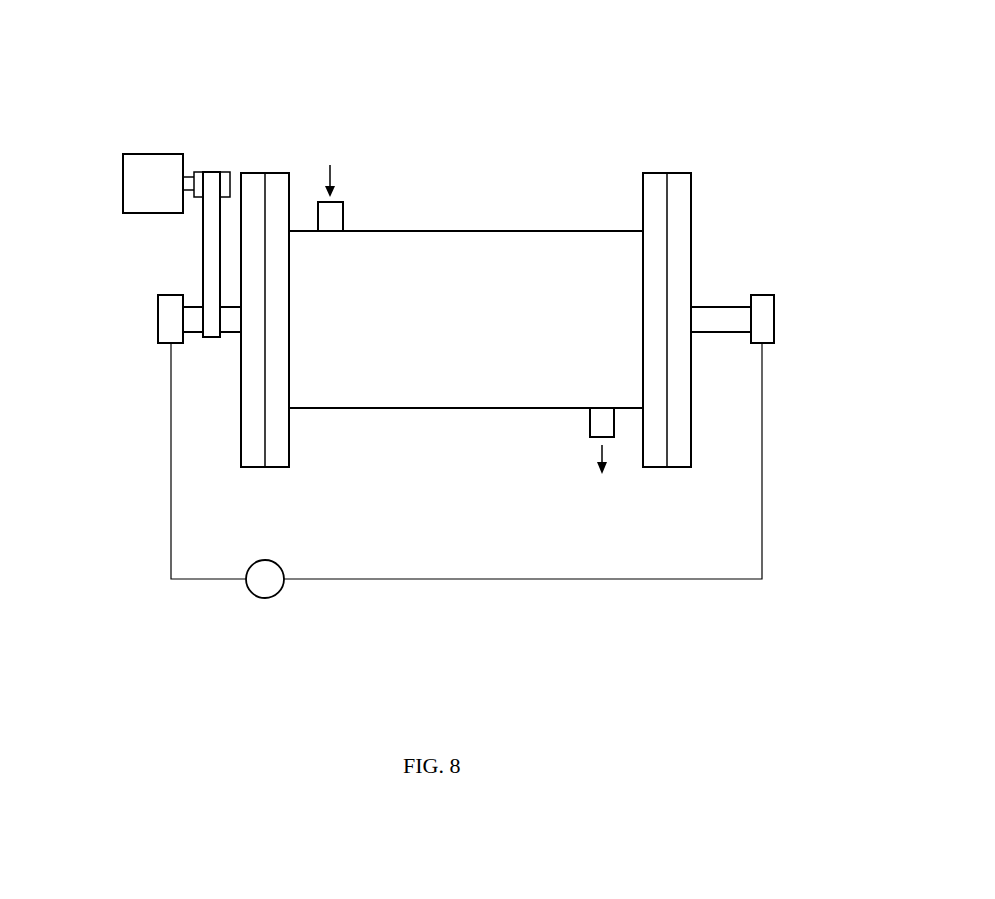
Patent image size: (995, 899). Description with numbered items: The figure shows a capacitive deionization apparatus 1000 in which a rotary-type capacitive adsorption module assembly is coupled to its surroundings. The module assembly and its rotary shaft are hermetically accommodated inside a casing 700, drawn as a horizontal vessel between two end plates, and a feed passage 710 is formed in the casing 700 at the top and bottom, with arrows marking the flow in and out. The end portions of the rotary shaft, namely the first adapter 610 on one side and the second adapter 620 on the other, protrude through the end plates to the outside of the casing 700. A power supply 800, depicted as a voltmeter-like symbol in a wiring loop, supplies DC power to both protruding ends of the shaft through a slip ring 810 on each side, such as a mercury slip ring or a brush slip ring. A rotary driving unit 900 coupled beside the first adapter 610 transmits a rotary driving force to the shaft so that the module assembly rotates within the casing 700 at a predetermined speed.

The capacitive deionization apparatus 1000 is at (479, 100).
The rotary driving unit 900 is at (121, 182).
The slip ring 810 is at (156, 318).
The first adapter 610 is at (196, 339).
The second adapter 620 is at (723, 306).
The casing 700 is at (406, 410).
The feed passage 710 is at (345, 218).
The power supply 800 is at (265, 599).